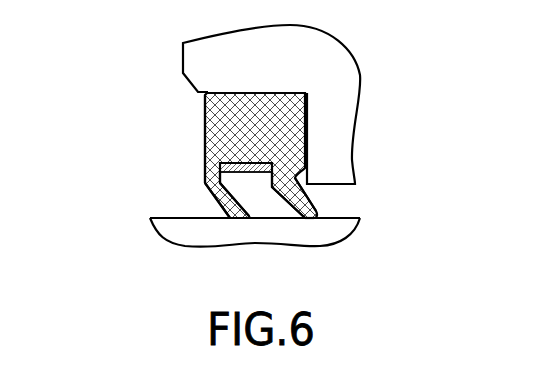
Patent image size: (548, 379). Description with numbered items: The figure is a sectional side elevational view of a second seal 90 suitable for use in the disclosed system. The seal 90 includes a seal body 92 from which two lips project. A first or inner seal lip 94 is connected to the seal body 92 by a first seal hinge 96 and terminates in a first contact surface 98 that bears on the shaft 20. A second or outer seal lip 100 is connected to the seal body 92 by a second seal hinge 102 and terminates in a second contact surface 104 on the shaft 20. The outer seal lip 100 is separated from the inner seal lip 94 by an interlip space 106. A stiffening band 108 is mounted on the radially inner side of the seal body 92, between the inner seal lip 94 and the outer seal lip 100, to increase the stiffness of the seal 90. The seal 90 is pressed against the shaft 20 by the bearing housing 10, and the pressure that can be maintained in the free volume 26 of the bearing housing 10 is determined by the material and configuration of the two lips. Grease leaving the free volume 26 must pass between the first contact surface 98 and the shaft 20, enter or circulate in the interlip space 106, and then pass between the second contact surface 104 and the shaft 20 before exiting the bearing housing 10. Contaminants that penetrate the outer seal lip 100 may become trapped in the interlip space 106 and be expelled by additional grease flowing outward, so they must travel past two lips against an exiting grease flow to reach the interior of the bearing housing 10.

The bearing housing 10 is at (340, 68).
The shaft 20 is at (336, 232).
The free volume 26 is at (131, 145).
The second seal 90 is at (252, 179).
The seal body 92 is at (306, 130).
The inner seal lip 94 is at (215, 200).
The first seal hinge 96 is at (205, 180).
The first contact surface 98 is at (235, 200).
The outer seal lip 100 is at (303, 195).
The second seal hinge 102 is at (272, 187).
The second contact surface 104 is at (305, 215).
The interlip space 106 is at (226, 172).
The stiffening band 108 is at (245, 187).